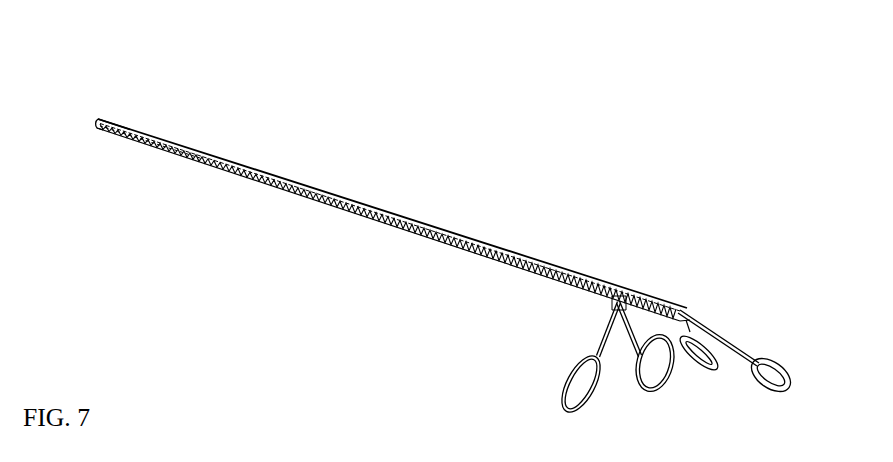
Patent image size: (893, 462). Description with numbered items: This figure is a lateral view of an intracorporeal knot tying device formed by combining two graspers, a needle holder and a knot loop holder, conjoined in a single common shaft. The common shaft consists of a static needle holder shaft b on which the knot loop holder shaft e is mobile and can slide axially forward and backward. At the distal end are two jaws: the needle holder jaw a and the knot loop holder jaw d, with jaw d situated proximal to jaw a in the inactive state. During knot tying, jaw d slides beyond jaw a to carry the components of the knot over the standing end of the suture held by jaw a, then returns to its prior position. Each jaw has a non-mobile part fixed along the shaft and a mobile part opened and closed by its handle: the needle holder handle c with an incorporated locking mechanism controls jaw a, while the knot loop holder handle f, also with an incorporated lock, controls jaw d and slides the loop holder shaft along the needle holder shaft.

The needle holder jaw a is at (102, 118).
The needle holder shaft b is at (402, 212).
The needle holder handle c is at (698, 323).
The knot loop holder jaw d is at (152, 150).
The knot loop holder shaft e is at (312, 193).
The knot loop holder handle f is at (613, 332).